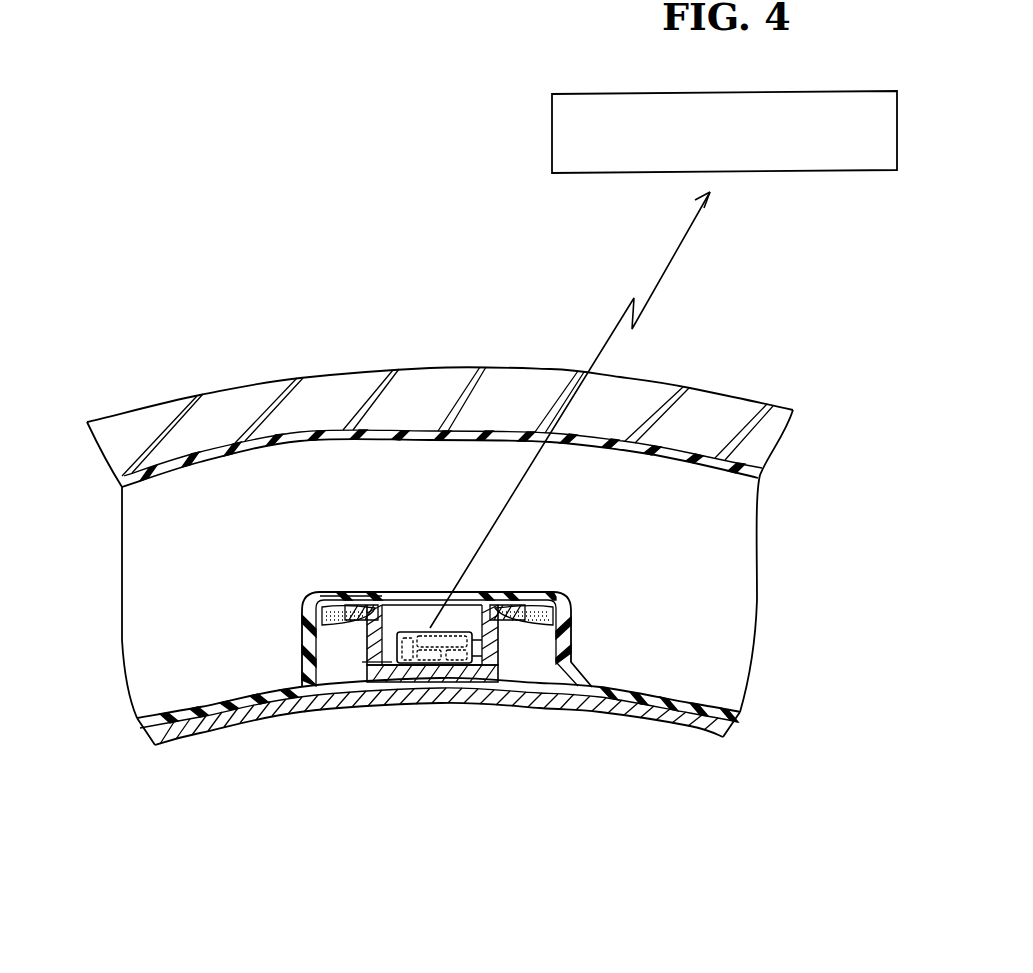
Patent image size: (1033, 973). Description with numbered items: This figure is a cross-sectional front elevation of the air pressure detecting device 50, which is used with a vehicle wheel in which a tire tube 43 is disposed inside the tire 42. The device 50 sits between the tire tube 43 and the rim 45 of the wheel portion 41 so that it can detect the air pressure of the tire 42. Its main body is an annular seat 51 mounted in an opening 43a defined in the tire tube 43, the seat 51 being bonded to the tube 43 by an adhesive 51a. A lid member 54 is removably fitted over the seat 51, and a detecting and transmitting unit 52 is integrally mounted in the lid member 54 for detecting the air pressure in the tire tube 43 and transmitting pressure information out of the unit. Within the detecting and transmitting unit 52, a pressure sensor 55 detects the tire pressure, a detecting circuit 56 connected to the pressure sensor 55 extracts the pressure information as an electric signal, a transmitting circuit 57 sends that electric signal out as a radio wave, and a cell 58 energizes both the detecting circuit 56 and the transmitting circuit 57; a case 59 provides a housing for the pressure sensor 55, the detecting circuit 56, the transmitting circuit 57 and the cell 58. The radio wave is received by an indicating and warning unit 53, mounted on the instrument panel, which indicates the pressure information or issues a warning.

The wheel portion 41 is at (632, 727).
The tire 42 is at (703, 388).
The tire tube 43 is at (703, 706).
The opening 43a is at (378, 592).
The rim 45 is at (682, 721).
The air pressure detecting device 50 is at (217, 205).
The annular seat 51 is at (346, 592).
The adhesive 51a is at (342, 626).
The detecting and transmitting unit 52 is at (440, 612).
The indicating and warning unit 53 is at (552, 140).
The lid member 54 is at (365, 660).
The pressure sensor 55 is at (457, 626).
The detecting circuit 56 is at (428, 663).
The transmitting circuit 57 is at (462, 665).
The cell 58 is at (410, 683).
The case 59 is at (427, 627).